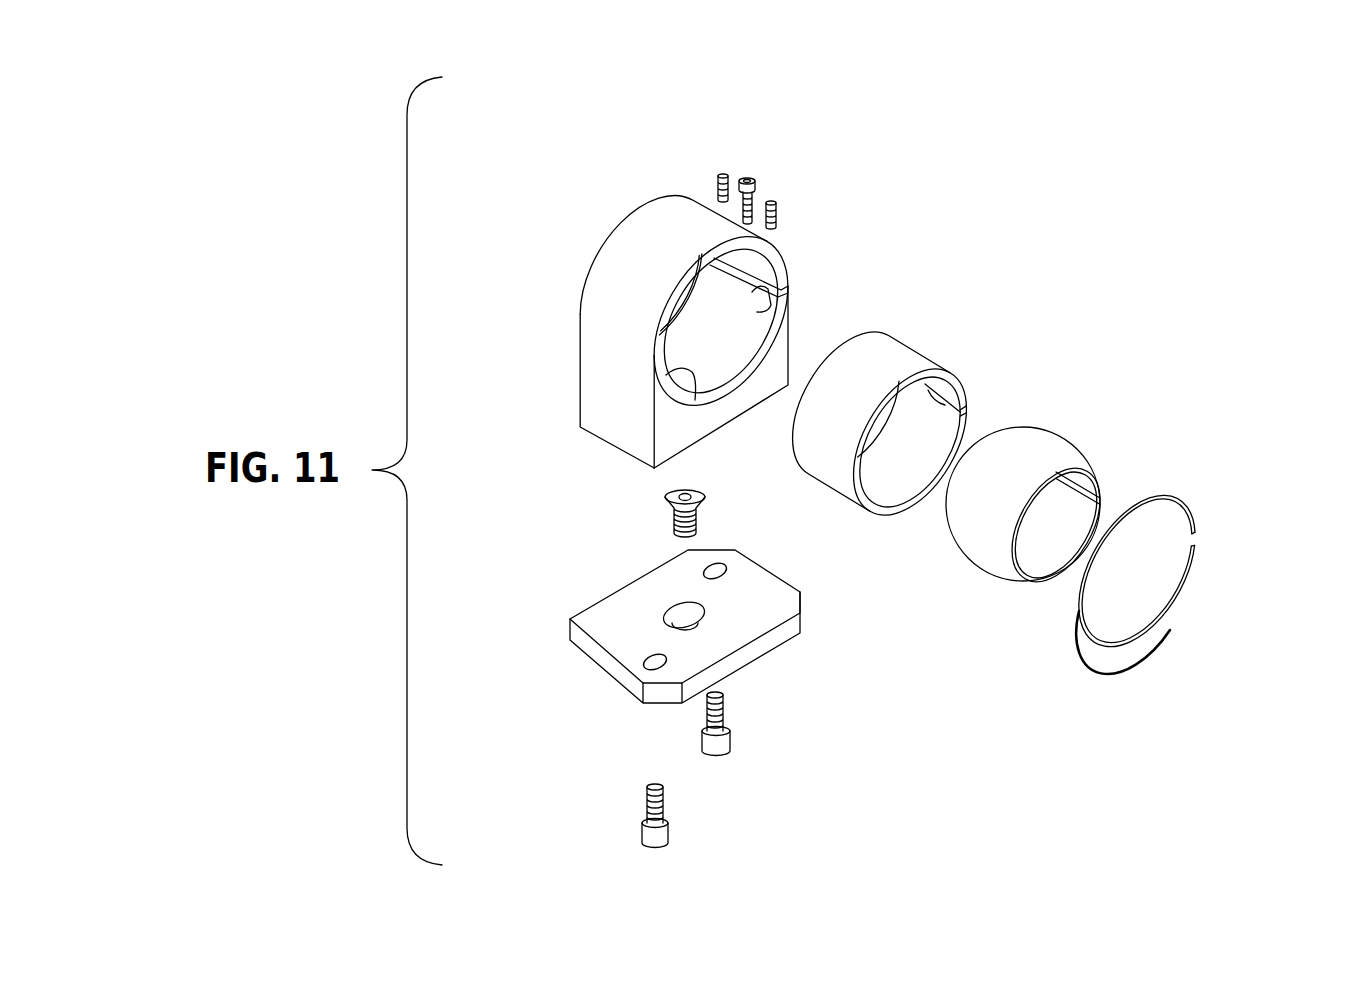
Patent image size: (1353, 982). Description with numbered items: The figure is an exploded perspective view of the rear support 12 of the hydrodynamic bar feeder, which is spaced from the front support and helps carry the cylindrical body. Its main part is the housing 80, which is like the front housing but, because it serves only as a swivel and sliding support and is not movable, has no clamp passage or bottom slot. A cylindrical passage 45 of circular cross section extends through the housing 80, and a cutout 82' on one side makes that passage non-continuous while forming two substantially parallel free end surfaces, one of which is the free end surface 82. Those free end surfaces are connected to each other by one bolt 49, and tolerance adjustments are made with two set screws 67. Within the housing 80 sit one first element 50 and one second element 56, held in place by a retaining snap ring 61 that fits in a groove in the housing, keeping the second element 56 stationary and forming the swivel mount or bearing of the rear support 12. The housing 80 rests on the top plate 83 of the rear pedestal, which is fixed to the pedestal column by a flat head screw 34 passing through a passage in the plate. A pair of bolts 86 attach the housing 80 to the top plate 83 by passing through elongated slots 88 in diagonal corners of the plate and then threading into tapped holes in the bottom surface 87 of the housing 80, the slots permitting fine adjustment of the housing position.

The rear support 12 is at (603, 162).
The housing 80 is at (608, 243).
The bottom surface 87 is at (587, 434).
The free end surface 82 is at (847, 247).
The cutout 82' is at (830, 257).
The top plate 83 is at (797, 312).
The cylindrical passage 45 is at (695, 400).
The set screws 67 is at (728, 178).
The bolt 49 is at (757, 190).
The second element 56 is at (933, 347).
The first element 50 is at (1073, 437).
The retaining snap ring 61 is at (1203, 505).
The elongated slots 88 is at (726, 569).
The flat head screw 34 is at (670, 519).
The bolts 86 is at (702, 741).